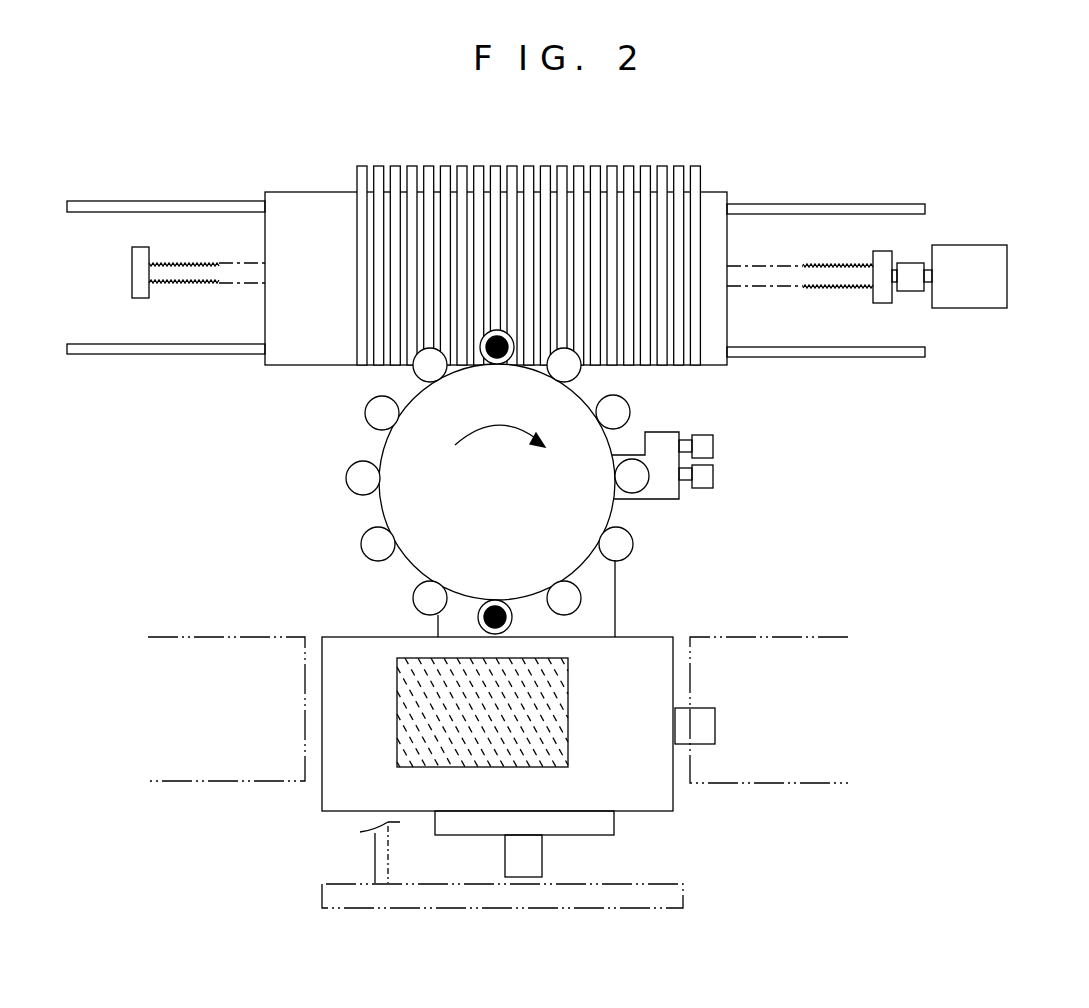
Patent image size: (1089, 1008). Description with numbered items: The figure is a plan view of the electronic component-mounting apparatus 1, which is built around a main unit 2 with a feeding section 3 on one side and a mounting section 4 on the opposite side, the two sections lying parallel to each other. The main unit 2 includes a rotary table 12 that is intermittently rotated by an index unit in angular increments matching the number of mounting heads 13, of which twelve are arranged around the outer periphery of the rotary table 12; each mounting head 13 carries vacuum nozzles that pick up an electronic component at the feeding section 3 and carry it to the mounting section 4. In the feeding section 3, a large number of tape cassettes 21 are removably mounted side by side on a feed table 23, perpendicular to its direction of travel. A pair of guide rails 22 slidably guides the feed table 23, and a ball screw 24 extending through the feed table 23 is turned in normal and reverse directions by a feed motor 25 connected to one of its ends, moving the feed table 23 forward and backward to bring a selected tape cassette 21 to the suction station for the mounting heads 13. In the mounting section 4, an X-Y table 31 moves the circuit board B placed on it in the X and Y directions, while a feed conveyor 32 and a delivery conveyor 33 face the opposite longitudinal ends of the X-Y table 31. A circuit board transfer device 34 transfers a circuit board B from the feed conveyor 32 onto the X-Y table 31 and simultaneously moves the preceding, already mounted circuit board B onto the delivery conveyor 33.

The electronic component-mounting apparatus 1 is at (1040, 215).
The main unit 2 is at (757, 447).
The feeding section 3 is at (815, 198).
The mounting section 4 is at (780, 862).
The rotary table 12 is at (512, 497).
The mounting heads 13 is at (643, 470).
The tape cassettes 21 is at (577, 166).
The guide rails 22 is at (178, 200).
The feed table 23 is at (300, 210).
The ball screw 24 is at (831, 290).
The feed motor 25 is at (1008, 278).
The X-Y table 31 is at (306, 826).
The feed conveyor 32 is at (222, 782).
The delivery conveyor 33 is at (745, 784).
The circuit board transfer device 34 is at (643, 885).
The circuit board B is at (568, 725).